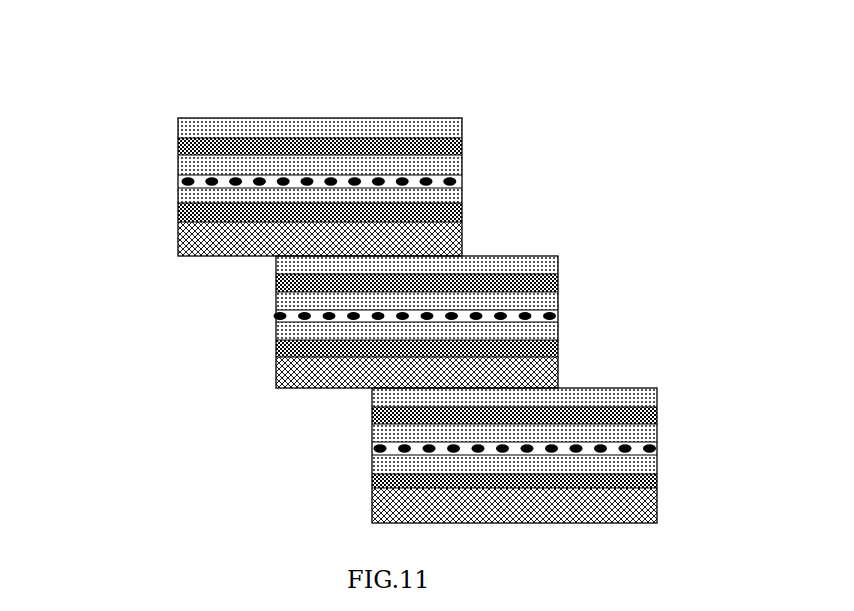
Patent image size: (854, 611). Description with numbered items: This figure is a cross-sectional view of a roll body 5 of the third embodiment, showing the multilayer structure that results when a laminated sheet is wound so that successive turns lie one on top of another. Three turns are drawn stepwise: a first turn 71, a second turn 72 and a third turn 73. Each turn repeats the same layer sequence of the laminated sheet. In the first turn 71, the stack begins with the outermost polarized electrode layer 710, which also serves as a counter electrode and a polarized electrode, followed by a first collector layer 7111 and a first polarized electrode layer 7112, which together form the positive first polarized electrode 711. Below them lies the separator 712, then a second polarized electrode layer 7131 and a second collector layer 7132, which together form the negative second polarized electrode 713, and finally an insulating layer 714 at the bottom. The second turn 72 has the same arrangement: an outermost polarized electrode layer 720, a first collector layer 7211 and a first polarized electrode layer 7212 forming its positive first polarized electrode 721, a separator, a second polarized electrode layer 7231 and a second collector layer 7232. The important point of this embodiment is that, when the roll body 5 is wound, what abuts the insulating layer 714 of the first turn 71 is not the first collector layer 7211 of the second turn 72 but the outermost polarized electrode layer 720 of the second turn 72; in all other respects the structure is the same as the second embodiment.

The roll body 5 is at (325, 102).
The first turn 71 is at (462, 118).
The second turn 72 is at (558, 256).
The third turn 73 is at (657, 388).
The outermost polarized electrode layer 710 is at (222, 122).
The positive first polarized electrode 711 is at (472, 147).
The first collector layer 7111 is at (178, 142).
The first polarized electrode layer 7112 is at (183, 164).
The separator 712 is at (180, 181).
The negative second polarized electrode 713 is at (472, 195).
The second polarized electrode layer 7131 is at (178, 210).
The second collector layer 7132 is at (178, 215).
The insulating layer 714 is at (177, 258).
The outermost polarized electrode layer of the second turn 720 is at (277, 258).
The positive first polarized electrode of the second turn 721 is at (568, 273).
The first collector layer of the second turn 7211 is at (276, 280).
The first polarized electrode layer of the second turn 7212 is at (277, 302).
The second polarized electrode layer of the second turn 7231 is at (277, 332).
The second collector layer of the second turn 7232 is at (288, 368).